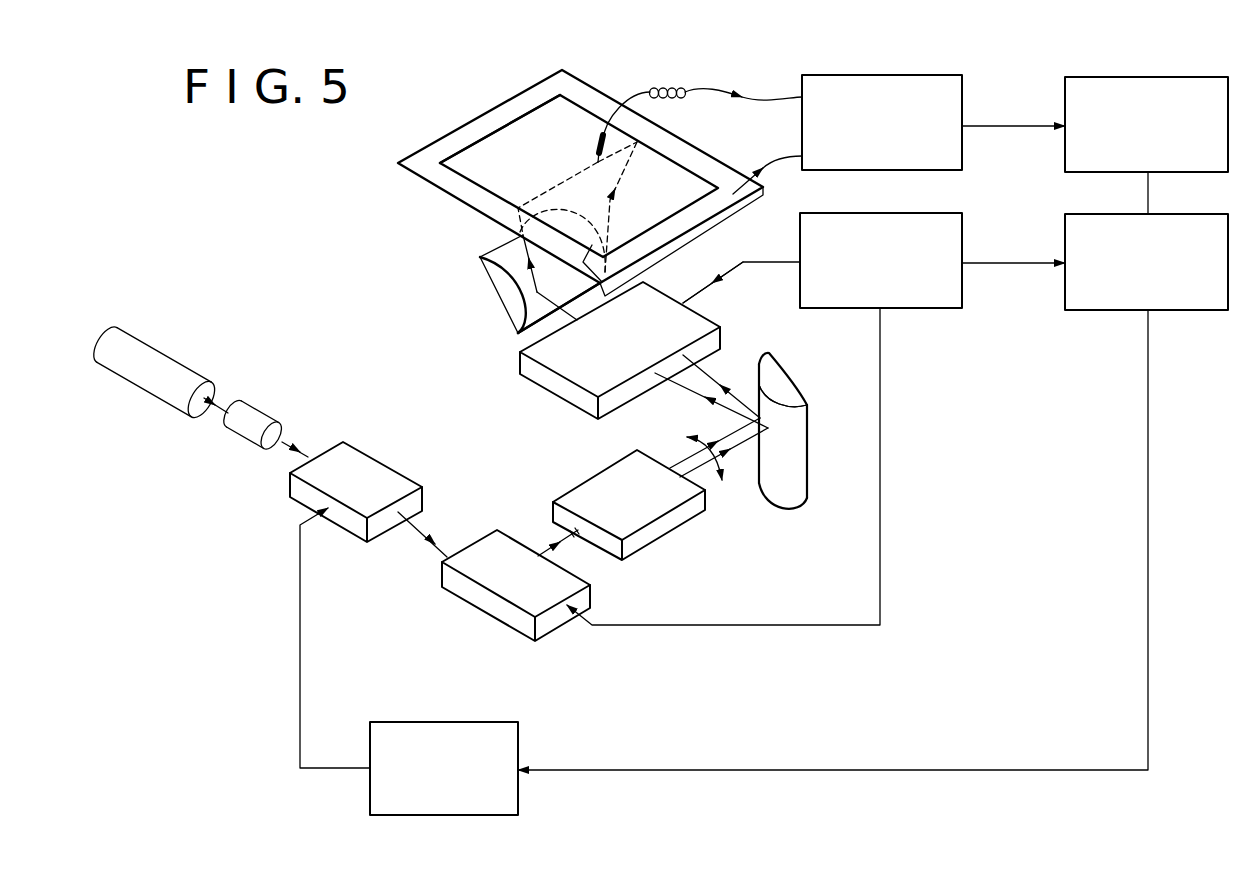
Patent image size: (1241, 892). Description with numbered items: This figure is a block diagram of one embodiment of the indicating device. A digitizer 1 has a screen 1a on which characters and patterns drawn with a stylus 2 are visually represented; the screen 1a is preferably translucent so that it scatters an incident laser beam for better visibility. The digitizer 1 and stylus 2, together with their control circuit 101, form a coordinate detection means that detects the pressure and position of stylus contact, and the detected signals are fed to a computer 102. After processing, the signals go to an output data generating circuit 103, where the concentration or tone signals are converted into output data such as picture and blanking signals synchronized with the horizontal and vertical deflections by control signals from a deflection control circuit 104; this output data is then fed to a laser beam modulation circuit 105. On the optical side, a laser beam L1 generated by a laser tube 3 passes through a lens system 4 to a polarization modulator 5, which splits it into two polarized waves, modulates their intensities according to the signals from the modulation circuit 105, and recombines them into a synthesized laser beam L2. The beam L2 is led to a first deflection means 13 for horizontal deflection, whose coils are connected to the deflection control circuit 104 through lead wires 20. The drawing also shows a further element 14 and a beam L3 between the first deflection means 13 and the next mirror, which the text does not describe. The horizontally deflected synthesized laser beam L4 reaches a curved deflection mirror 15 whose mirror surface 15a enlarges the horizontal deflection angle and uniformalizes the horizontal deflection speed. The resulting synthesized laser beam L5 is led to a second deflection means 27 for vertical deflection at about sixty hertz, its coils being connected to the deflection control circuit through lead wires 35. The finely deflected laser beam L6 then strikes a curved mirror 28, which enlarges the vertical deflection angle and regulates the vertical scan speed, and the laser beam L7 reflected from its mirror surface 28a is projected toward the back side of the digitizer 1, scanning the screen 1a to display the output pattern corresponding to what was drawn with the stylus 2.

The digitizer 1 is at (517, 105).
The screen 1a is at (482, 153).
The stylus 2 is at (605, 142).
The laser tube 3 is at (173, 355).
The lens system 4 is at (260, 408).
The polarization modulator 5 is at (392, 467).
The first deflection means 13 is at (485, 600).
The second light deflector 14 is at (655, 505).
The curved deflection mirror 15 is at (790, 398).
The mirror surface 15a is at (787, 452).
The lead wires 20 is at (745, 626).
The second deflection means 27 is at (567, 367).
The curved mirror 28 is at (500, 283).
The mirror surface 28a is at (533, 312).
The lead wires 35 is at (763, 260).
The control circuit 101 is at (895, 75).
The computer 102 is at (1147, 77).
The output data generating circuit 103 is at (1165, 215).
The deflection control circuit 104 is at (963, 225).
The laser beam modulation circuit 105 is at (443, 722).
The laser beam L1 is at (216, 416).
The synthesized laser beam L2 is at (435, 531).
The deflected light beam L3 is at (572, 538).
The synthesized laser beam L4 is at (725, 452).
The synthesized laser beam L5 is at (745, 390).
The laser beam L6 is at (612, 288).
The laser beam L7 is at (523, 236).